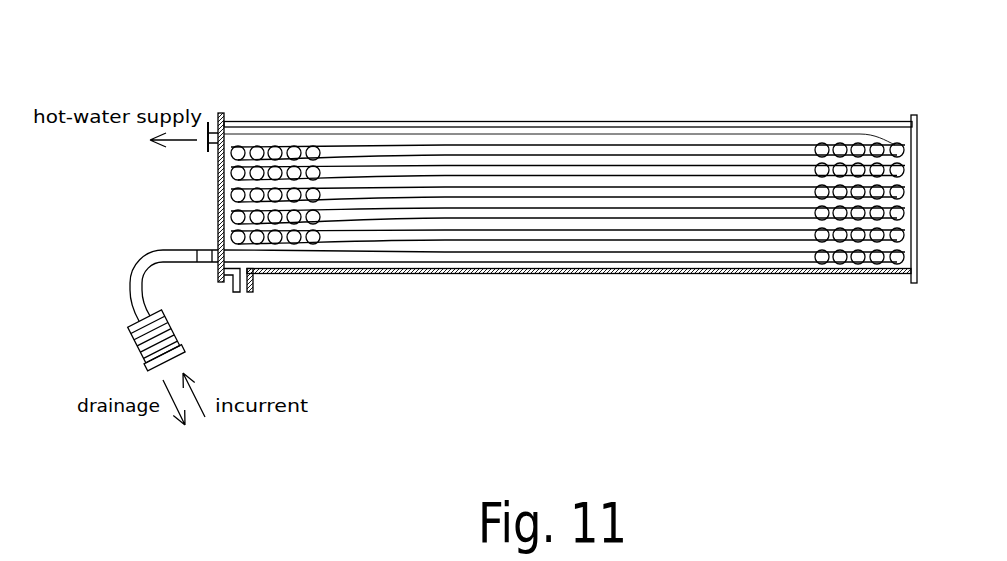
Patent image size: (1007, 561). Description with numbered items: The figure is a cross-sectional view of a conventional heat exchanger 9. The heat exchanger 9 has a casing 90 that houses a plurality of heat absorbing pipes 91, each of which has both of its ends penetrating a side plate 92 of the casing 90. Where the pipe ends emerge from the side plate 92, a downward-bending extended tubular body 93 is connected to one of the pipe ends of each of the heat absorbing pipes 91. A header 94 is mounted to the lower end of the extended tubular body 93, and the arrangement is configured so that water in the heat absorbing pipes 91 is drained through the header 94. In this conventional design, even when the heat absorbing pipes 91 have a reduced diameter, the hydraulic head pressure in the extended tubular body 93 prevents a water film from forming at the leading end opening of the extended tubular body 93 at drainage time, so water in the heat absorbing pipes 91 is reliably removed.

The heat exchanger 9 is at (572, 104).
The casing 90 is at (863, 120).
The heat absorbing pipes 91 is at (408, 158).
The side plate 92 is at (217, 213).
The extended tubular body 93 is at (163, 250).
The header 94 is at (183, 342).